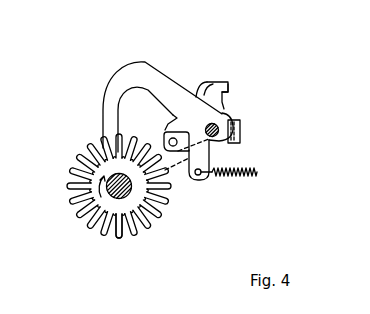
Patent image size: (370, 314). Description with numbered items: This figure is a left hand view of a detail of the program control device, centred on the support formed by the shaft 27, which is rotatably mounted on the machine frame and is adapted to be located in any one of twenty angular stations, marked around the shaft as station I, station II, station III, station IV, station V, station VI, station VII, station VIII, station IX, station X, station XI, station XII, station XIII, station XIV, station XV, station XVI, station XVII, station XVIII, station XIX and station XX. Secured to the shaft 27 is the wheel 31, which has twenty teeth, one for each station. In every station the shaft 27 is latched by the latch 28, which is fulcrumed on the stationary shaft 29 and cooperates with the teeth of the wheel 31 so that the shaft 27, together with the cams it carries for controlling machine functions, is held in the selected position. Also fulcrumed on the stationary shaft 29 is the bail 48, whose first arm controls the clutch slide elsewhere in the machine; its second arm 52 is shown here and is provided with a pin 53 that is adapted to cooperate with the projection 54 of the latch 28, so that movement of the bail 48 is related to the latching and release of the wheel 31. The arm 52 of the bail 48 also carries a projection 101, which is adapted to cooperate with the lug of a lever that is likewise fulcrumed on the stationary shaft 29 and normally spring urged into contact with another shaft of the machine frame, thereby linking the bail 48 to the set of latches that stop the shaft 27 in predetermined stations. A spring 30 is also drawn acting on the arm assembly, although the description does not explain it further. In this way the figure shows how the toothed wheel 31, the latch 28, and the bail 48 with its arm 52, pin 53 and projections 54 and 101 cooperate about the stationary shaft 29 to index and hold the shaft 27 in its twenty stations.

The shaft 27 is at (114, 198).
The latch 28 is at (117, 88).
The stationary shaft 29 is at (239, 122).
The spring 30 is at (258, 170).
The wheel 31 is at (123, 205).
The bail 48 is at (240, 133).
The second arm 52 is at (232, 85).
The pin 53 is at (170, 138).
The projection 54 is at (176, 124).
The projection 101 is at (230, 88).
The angular station I is at (117, 63).
The angular station II is at (102, 133).
The angular station III is at (85, 140).
The angular station IV is at (75, 155).
The angular station V is at (68, 173).
The angular station VI is at (67, 187).
The angular station VII is at (68, 205).
The angular station VIII is at (77, 220).
The angular station IX is at (88, 228).
The angular station X is at (105, 238).
The angular station XI is at (122, 245).
The angular station XII is at (138, 238).
The angular station XIII is at (165, 224).
The angular station XIV is at (168, 217).
The angular station XV is at (175, 202).
The angular station XVI is at (213, 185).
The angular station XVII is at (243, 140).
The angular station XVIII is at (228, 110).
The angular station XIX is at (185, 123).
The angular station XX is at (157, 65).